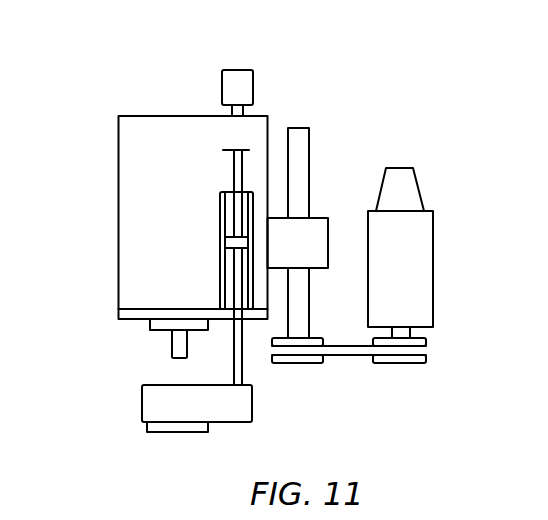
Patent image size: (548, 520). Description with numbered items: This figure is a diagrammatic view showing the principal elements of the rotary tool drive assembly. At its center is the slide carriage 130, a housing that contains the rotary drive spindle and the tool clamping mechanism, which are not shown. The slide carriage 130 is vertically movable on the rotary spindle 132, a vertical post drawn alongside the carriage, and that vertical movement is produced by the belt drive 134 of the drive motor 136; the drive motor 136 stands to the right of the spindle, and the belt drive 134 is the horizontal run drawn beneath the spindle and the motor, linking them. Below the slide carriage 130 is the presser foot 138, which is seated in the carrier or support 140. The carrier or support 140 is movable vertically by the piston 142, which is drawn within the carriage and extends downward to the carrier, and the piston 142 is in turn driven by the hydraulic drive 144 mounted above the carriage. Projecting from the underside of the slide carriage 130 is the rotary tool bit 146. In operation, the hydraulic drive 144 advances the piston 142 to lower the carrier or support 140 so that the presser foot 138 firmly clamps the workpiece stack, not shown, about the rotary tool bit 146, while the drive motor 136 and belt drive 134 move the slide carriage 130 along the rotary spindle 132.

The slide carriage 130 is at (143, 287).
The rotary spindle 132 is at (299, 152).
The belt drive 134 is at (350, 350).
The drive motor 136 is at (417, 262).
The presser foot 138 is at (160, 427).
The carrier or support 140 is at (152, 400).
The piston 142 is at (238, 175).
The hydraulic drive 144 is at (240, 78).
The rotary tool bit 146 is at (172, 343).